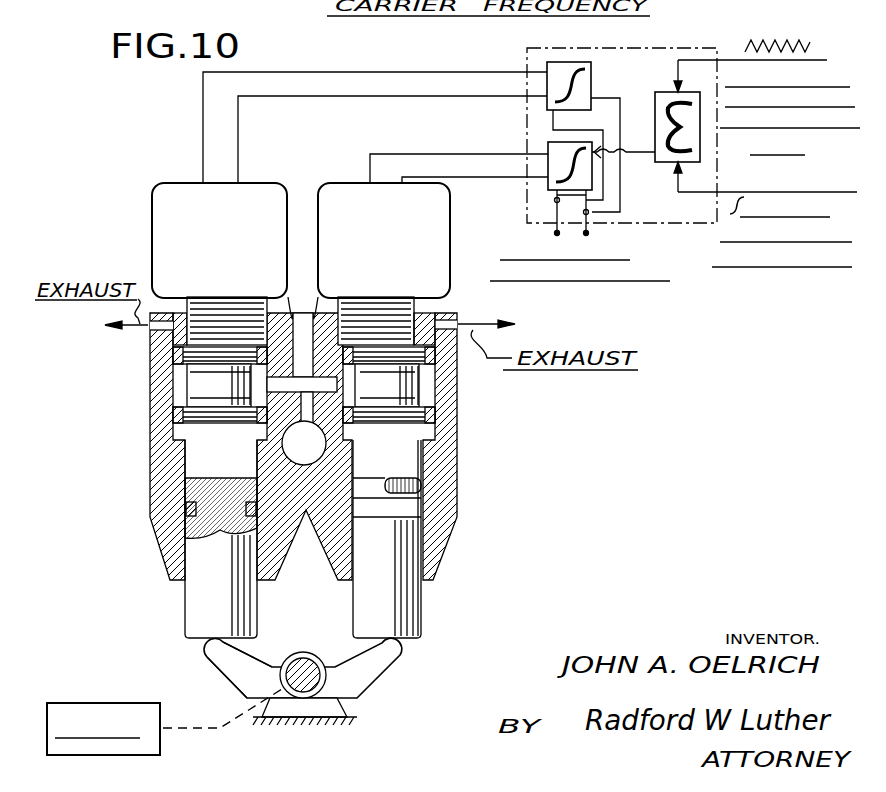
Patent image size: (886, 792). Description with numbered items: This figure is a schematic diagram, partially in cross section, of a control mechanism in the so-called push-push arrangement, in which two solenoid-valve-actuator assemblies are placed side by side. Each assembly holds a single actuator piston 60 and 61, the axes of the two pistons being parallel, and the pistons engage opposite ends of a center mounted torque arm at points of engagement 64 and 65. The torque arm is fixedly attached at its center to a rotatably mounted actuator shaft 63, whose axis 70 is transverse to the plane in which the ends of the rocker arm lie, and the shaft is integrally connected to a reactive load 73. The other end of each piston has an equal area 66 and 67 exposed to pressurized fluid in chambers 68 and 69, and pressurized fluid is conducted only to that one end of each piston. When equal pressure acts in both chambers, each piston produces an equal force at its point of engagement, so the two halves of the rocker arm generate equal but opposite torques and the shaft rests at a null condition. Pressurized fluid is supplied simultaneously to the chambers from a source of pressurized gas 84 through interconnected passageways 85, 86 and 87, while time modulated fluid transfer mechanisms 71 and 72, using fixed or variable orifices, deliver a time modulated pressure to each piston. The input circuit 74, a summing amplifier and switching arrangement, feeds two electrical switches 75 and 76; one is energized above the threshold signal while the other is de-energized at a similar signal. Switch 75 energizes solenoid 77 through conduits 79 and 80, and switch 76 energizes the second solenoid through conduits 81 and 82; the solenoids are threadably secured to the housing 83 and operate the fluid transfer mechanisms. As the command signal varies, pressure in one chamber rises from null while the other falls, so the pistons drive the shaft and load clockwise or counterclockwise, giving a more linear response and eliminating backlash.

The actuator piston 60 is at (385, 605).
The actuator piston 61 is at (205, 595).
The actuator shaft 63 is at (350, 690).
The point of engagement 64 is at (397, 652).
The point of engagement 65 is at (207, 650).
The pressurized end area 66 is at (432, 493).
The pressurized end area 67 is at (200, 473).
The chamber 68 is at (420, 450).
The chamber 69 is at (195, 447).
The axis of actuator shaft 70 is at (218, 732).
The time modulated fluid transfer mechanism 71 is at (425, 385).
The time modulated fluid transfer mechanism 72 is at (200, 385).
The reactive load 73 is at (95, 708).
The input circuit 74 is at (690, 46).
The electrical switch 75 is at (553, 63).
The electrical switch 76 is at (394, 252).
The solenoid 77 is at (234, 252).
The conduit 79 is at (392, 70).
The conduit 80 is at (395, 98).
The conduit 81 is at (476, 128).
The conduit 82 is at (490, 178).
The housing 83 is at (175, 420).
The source of pressurized gas 84 is at (310, 444).
The passageway 85 is at (303, 403).
The passageway 86 is at (300, 350).
The passageway 87 is at (378, 320).